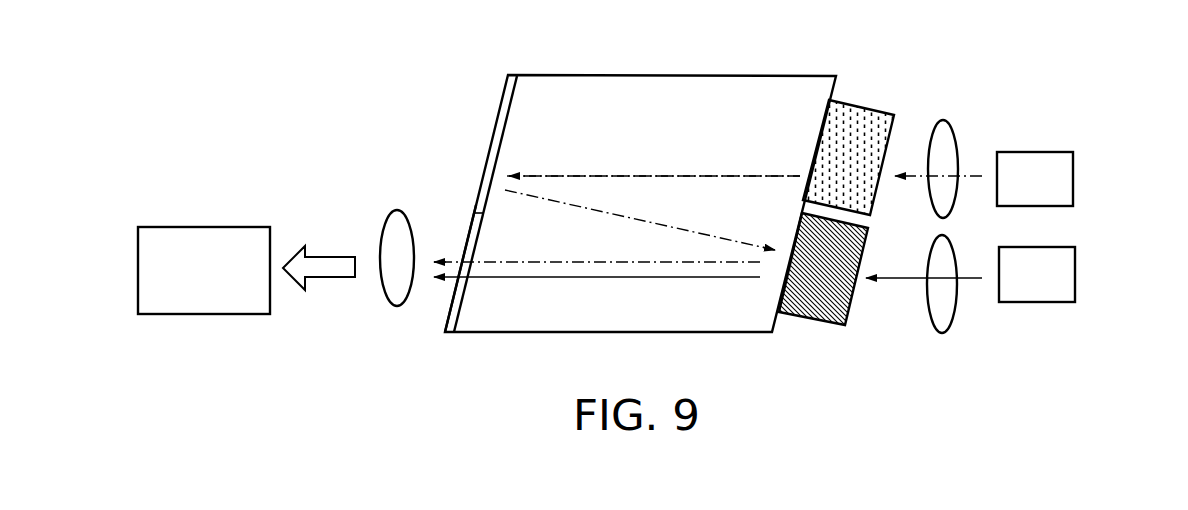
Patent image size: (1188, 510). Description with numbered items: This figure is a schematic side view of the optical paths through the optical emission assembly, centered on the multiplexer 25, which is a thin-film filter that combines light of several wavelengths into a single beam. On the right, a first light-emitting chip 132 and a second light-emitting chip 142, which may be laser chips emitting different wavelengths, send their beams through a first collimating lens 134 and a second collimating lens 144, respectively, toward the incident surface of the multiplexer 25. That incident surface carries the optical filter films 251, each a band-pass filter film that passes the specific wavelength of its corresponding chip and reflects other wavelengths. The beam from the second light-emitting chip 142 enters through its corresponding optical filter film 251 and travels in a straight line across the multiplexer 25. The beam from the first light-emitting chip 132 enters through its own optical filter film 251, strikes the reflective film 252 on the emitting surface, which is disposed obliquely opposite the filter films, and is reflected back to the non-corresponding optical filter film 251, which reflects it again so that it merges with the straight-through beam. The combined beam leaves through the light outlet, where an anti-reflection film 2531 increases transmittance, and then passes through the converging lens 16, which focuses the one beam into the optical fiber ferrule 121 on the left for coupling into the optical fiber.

The multiplexer 25 is at (470, 74).
The optical filter film 251 is at (852, 102).
The reflective film 252 is at (490, 157).
The anti-reflection film 2531 is at (443, 312).
The converging lens 16 is at (387, 212).
The optical fiber ferrule 121 is at (203, 315).
The first light-emitting chip 132 is at (1058, 175).
The second light-emitting chip 142 is at (1058, 273).
The first collimating lens 134 is at (942, 118).
The second collimating lens 144 is at (937, 333).